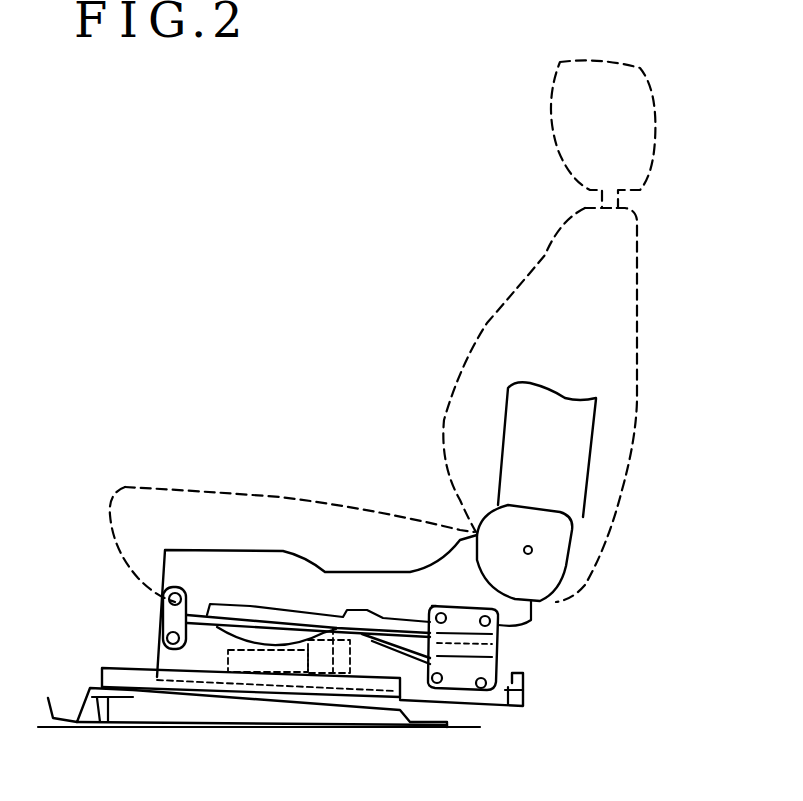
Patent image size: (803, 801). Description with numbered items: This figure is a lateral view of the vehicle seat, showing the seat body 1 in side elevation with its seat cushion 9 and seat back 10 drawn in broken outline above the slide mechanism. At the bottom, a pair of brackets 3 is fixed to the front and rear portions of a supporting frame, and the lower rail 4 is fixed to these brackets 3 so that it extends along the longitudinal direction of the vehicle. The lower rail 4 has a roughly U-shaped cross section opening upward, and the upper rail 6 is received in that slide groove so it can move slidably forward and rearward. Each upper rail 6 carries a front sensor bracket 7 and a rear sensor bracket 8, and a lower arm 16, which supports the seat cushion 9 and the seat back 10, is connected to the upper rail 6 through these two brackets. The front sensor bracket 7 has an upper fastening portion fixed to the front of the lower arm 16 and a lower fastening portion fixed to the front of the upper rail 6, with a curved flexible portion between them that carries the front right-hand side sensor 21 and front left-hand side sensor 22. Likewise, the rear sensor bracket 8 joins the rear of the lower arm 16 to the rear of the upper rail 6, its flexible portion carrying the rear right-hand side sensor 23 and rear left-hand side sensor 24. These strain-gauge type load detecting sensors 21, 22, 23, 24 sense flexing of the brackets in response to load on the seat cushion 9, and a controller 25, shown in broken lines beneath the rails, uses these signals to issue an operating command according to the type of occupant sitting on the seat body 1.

The seat body 1 is at (456, 297).
The bracket 3 is at (67, 710).
The lower rail 4 is at (108, 665).
The upper rail 6 is at (505, 705).
The front sensor bracket 7 is at (192, 587).
The rear sensor bracket 8 is at (465, 606).
The seat cushion 9 is at (174, 485).
The seat back 10 is at (640, 318).
The lower arm 16 is at (262, 563).
The front right-hand side sensor 21 is at (163, 614).
The front left-hand side sensor 22 is at (160, 614).
The rear right-hand side sensor 23 is at (503, 652).
The rear left-hand side sensor 24 is at (503, 652).
The controller 25 is at (228, 660).